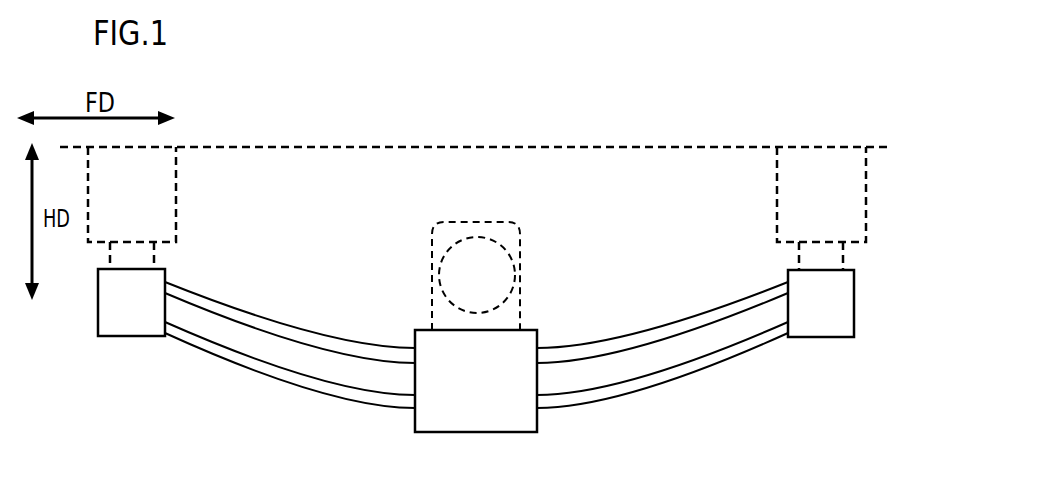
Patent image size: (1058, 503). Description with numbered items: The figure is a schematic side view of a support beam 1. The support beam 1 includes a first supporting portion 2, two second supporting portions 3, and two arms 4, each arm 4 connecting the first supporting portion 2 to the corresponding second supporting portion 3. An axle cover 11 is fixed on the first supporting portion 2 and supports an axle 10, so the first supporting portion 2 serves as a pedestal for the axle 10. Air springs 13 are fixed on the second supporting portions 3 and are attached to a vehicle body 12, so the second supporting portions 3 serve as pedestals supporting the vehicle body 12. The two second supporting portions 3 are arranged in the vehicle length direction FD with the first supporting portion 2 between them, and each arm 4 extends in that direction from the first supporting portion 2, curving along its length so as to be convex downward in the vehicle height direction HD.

The support beam 1 is at (866, 279).
The first supporting portion 2 is at (533, 330).
The second supporting portion 3 is at (165, 269).
The arm 4 is at (273, 323).
The axle 10 is at (432, 232).
The axle cover 11 is at (510, 246).
The vehicle body 12 is at (646, 150).
The air spring 13 is at (180, 196).